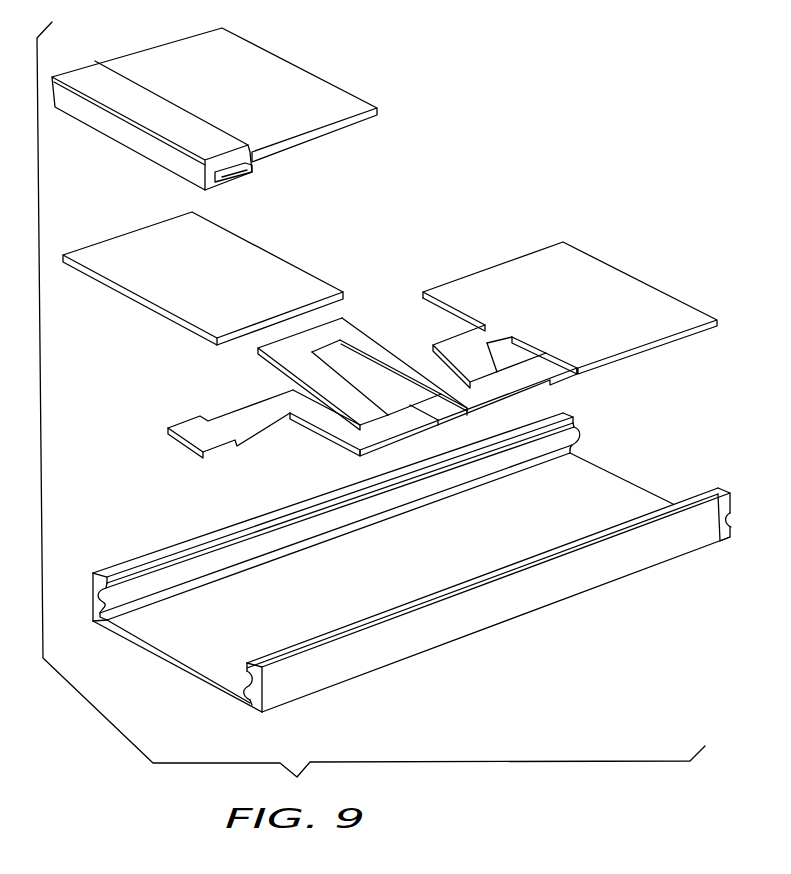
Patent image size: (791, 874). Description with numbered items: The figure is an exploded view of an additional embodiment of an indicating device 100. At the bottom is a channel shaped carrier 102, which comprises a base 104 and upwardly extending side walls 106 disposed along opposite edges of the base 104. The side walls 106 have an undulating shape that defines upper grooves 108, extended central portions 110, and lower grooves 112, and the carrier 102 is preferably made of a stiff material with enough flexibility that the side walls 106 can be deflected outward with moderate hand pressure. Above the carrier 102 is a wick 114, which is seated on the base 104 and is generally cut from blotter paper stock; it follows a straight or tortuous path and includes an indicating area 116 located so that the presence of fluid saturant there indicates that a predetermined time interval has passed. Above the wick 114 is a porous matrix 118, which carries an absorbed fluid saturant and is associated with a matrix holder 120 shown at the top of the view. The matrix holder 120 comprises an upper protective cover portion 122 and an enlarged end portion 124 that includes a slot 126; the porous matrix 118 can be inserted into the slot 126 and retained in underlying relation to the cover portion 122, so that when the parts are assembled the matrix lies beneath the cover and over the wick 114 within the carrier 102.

The indicating device 100 is at (424, 118).
The channel shaped carrier 102 is at (544, 618).
The base 104 is at (617, 482).
The side walls 106 is at (267, 538).
The upper grooves 108 is at (110, 597).
The extended central portions 110 is at (227, 557).
The lower grooves 112 is at (102, 618).
The wick 114 is at (192, 427).
The indicating area 116 is at (533, 280).
The porous matrix 118 is at (280, 272).
The matrix holder 120 is at (121, 146).
The upper protective cover portion 122 is at (275, 65).
The enlarged end portion 124 is at (92, 73).
The slot 126 is at (227, 171).